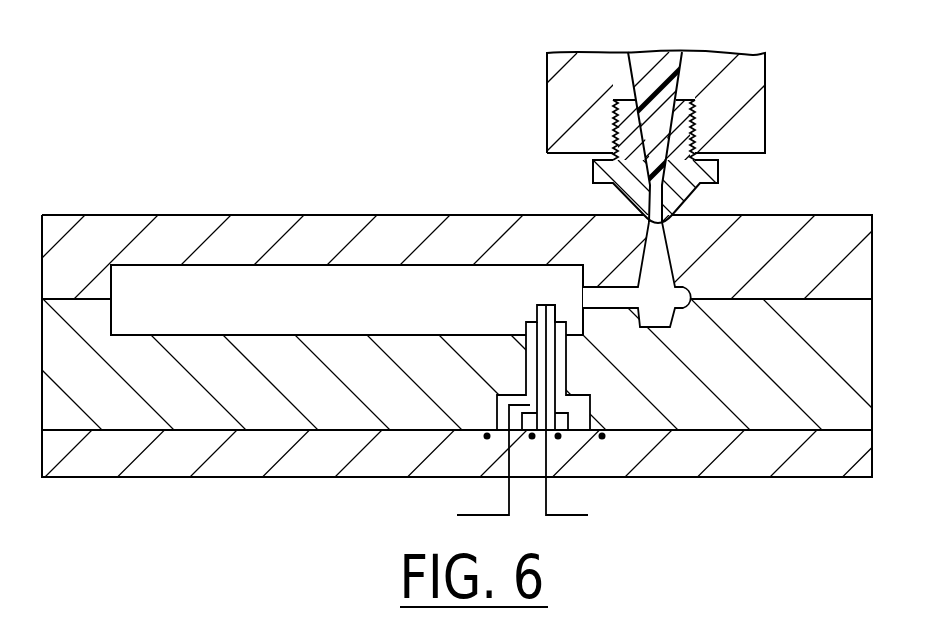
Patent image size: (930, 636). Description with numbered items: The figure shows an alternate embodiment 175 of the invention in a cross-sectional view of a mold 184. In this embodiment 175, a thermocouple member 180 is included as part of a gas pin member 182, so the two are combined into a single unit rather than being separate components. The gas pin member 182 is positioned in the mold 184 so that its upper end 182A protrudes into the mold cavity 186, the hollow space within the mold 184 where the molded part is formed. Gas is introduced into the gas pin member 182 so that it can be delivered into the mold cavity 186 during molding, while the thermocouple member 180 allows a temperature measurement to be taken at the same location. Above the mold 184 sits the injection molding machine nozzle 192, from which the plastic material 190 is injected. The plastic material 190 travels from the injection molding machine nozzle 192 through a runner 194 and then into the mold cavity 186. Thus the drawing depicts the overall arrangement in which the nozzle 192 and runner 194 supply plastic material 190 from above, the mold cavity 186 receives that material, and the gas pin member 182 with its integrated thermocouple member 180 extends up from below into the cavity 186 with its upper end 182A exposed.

The embodiment 175 is at (575, 151).
The thermocouple member 180 is at (546, 492).
The gas pin member 182 is at (557, 360).
The upper end 182A is at (537, 309).
The mold 184 is at (862, 337).
The mold cavity 186 is at (353, 334).
The plastic material 190 is at (676, 57).
The injection molding machine nozzle 192 is at (767, 116).
The runner 194 is at (610, 292).